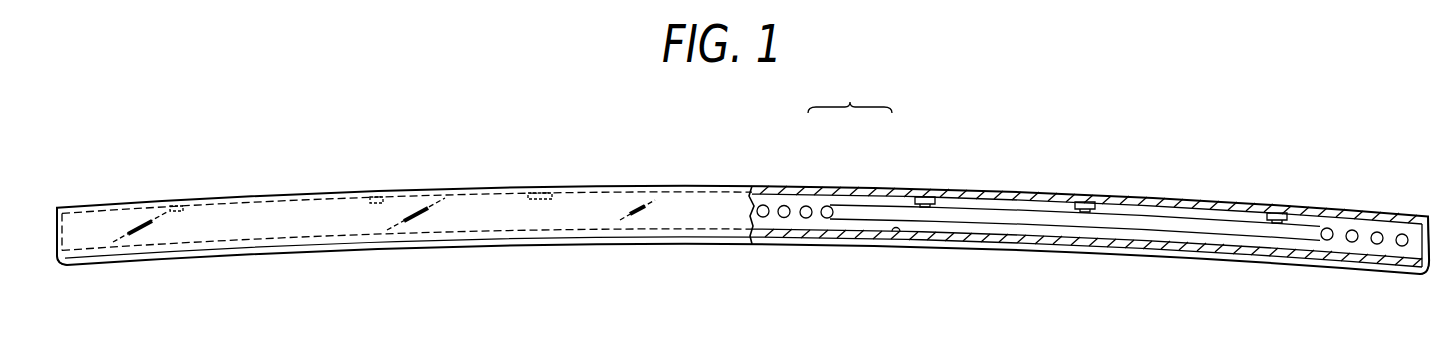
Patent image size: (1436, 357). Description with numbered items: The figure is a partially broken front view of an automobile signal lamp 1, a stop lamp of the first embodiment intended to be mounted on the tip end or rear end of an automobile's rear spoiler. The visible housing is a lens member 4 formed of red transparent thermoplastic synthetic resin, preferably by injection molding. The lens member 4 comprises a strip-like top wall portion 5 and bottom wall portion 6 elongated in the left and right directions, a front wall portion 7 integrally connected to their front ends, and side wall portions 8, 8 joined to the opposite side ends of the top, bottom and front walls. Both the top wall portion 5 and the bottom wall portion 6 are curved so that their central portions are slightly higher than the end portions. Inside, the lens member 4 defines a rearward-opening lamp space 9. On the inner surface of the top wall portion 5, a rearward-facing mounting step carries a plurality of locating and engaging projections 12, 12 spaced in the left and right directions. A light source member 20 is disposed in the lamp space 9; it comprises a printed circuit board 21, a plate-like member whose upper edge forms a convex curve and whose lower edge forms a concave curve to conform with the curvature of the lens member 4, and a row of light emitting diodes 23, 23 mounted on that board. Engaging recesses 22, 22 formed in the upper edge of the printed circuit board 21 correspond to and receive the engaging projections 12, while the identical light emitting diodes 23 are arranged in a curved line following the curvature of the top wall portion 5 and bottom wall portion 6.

The automobile signal lamp 1 is at (1182, 157).
The lens member 4 is at (675, 208).
The top wall portion 5 is at (1013, 192).
The bottom wall portion 6 is at (1003, 245).
The front wall portion 7 is at (602, 218).
The side wall portions 8 is at (55, 243).
The lamp space 9 is at (896, 234).
The locating and engaging projections 12 is at (378, 195).
The light source member 20 is at (850, 92).
The printed circuit board 21 is at (867, 200).
The engaging recesses 22 is at (182, 212).
The light emitting diodes 23 is at (783, 205).